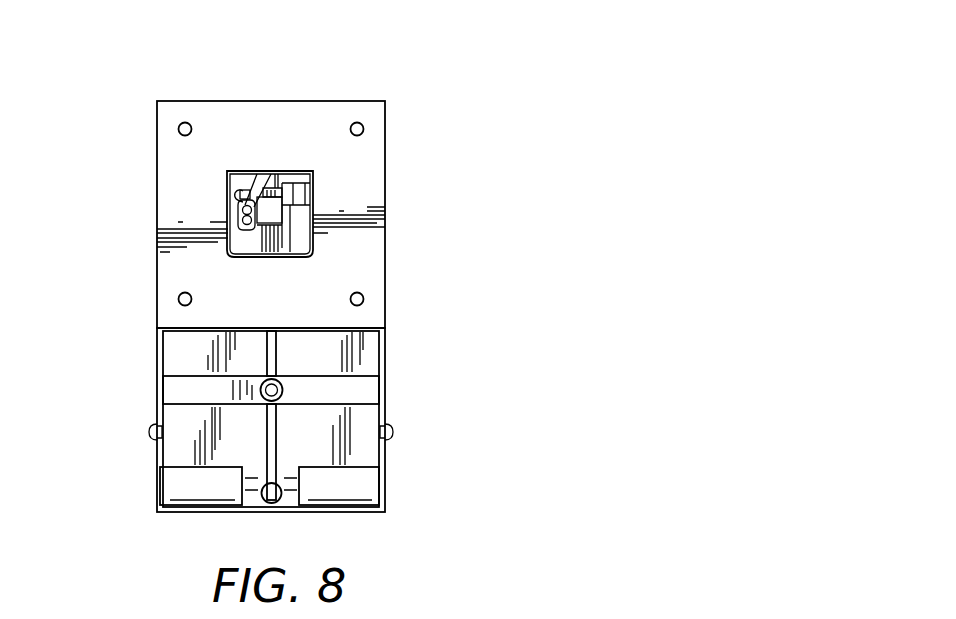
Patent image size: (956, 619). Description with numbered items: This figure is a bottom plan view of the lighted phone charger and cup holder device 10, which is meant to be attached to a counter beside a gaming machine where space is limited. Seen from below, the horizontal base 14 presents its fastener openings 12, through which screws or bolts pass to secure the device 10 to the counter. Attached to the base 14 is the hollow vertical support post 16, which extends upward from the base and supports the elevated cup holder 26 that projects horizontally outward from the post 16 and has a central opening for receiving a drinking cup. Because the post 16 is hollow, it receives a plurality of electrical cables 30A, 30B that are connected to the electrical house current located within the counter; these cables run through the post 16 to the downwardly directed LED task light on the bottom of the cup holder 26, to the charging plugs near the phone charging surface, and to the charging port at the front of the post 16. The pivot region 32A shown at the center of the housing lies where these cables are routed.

The lighted phone charger and cup holder device 10 is at (542, 157).
The fastener openings 12 is at (185, 130).
The horizontal base 14 is at (308, 121).
The hollow vertical support post 16 is at (313, 242).
The cup holder 26 is at (370, 367).
The electrical cable 30A is at (300, 355).
The electrical cable 30B is at (277, 443).
The pivot 32A is at (260, 391).